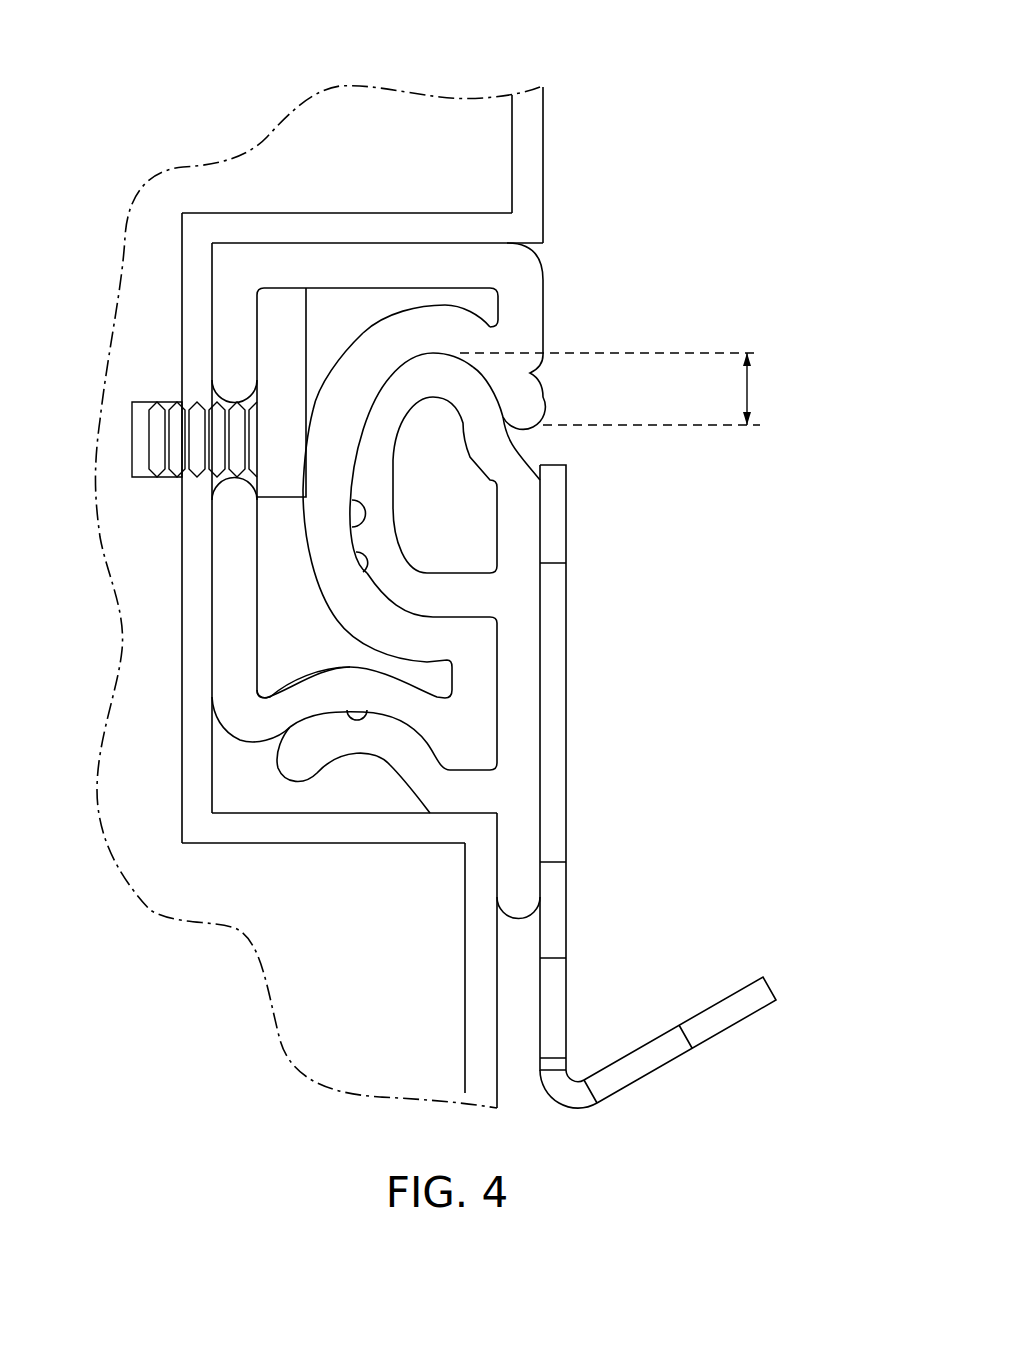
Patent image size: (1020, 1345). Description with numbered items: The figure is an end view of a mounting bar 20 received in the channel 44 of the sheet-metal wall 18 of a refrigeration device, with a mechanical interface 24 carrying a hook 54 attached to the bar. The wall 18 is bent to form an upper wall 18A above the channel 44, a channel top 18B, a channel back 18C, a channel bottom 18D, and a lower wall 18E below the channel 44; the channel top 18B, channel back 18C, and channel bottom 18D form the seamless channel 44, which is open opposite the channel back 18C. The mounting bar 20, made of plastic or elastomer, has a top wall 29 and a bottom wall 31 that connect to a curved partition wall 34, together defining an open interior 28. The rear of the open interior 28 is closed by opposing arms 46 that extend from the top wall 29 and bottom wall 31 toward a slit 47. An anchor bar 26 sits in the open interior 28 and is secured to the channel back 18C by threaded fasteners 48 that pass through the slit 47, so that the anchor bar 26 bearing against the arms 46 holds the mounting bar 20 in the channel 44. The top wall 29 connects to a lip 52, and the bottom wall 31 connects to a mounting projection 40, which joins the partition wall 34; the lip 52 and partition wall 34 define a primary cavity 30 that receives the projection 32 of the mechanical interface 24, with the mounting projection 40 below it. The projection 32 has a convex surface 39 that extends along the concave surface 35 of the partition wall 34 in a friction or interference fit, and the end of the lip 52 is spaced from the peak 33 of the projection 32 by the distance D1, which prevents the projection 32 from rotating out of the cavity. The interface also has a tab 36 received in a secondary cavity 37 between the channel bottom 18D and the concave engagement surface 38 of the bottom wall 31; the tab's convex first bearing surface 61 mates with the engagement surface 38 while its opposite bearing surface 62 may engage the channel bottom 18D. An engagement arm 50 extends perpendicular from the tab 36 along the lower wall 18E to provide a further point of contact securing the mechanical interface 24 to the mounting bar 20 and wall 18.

The wall 18 is at (321, 587).
The upper wall 18A is at (512, 128).
The channel top 18B is at (392, 213).
The channel back 18C is at (182, 262).
The channel bottom 18D is at (323, 843).
The lower wall 18E is at (465, 997).
The mounting bar 20 is at (378, 511).
The mechanical interface 24 is at (513, 470).
The anchor bar 26 is at (218, 489).
The open interior 28 is at (330, 315).
The top wall 29 is at (313, 255).
The primary cavity 30 is at (433, 352).
The bottom wall 31 is at (297, 686).
The projection 32 is at (485, 380).
The peak 33 is at (477, 320).
The partition wall 34 is at (352, 362).
The concave surface 35 is at (357, 527).
The tab 36 is at (410, 767).
The secondary cavity 37 is at (240, 764).
The engagement surface 38 is at (367, 712).
The convex surface 39 is at (355, 570).
The mounting projection 40 is at (473, 672).
The channel 44 is at (227, 245).
The opposing arms 46 is at (235, 330).
The slit 47 is at (147, 475).
The fasteners 48 is at (190, 467).
The engagement arm 50 is at (517, 868).
The lip 52 is at (517, 395).
The hook 54 is at (598, 786).
The first bearing surface 61 is at (313, 715).
The bearing surface 62 is at (465, 817).
The spacing between lip end and peak D1 is at (752, 390).